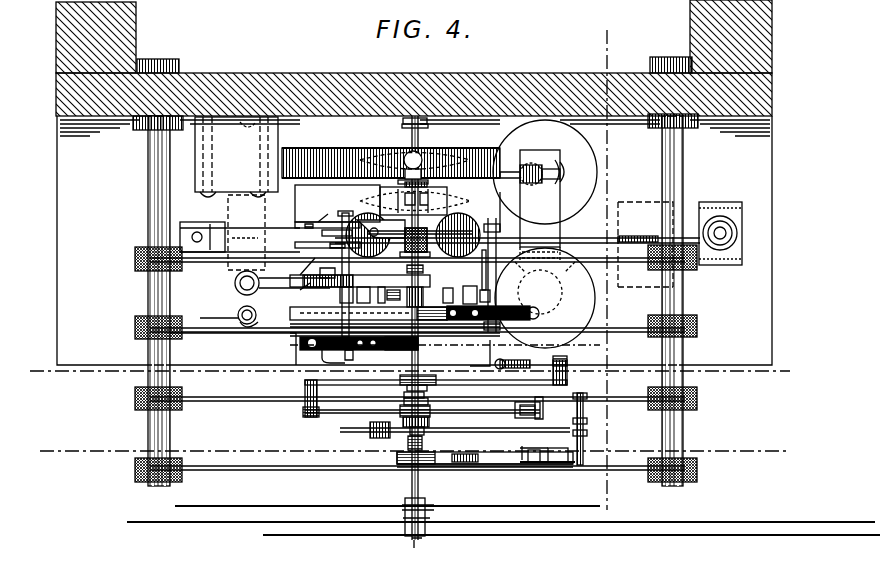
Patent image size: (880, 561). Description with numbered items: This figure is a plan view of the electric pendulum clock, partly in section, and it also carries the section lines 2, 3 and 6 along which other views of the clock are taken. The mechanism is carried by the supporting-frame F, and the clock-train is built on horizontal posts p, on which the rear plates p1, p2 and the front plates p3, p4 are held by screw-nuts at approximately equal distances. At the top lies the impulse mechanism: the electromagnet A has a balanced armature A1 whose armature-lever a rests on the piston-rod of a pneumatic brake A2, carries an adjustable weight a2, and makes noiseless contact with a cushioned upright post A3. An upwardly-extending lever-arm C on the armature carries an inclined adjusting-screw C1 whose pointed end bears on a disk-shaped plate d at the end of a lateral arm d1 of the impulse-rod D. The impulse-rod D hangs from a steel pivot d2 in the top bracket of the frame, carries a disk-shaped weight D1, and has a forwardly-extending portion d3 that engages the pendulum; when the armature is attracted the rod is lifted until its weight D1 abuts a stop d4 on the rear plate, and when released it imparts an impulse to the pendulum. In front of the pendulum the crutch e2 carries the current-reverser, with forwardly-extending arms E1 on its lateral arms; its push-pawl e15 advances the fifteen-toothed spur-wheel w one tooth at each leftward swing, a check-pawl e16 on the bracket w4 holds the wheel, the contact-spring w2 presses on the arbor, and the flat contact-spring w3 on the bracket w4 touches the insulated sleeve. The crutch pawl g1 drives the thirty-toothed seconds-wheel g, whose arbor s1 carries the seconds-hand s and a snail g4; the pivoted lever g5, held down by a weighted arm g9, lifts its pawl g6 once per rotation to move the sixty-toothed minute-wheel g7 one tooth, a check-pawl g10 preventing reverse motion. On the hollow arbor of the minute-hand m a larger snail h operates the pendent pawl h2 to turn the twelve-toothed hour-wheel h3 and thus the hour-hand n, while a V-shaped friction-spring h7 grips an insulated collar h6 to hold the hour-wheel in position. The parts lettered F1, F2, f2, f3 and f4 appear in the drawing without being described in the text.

The supporting-frame F is at (70, 97).
The horizontal posts p is at (148, 186).
The rear plate p1 is at (135, 259).
The second supporting-plate p2 is at (135, 327).
The third supporting-plate p3 is at (135, 400).
The front plate p4 is at (135, 468).
The section line 6 6 is at (412, 384).
The section line 3 3 is at (408, 458).
The section line 2 2 is at (605, 270).
The hour-hand n is at (387, 496).
The minute-hand m is at (501, 532).
The seconds-hand s is at (533, 536).
The arbor of the seconds-hand s1 is at (417, 546).
The steel pivot d2 is at (422, 128).
The disk-shaped weight D1 is at (391, 150).
The impulse-rod D is at (405, 156).
The lateral arm d1 is at (440, 168).
The forwardly-extending portion d3 is at (385, 199).
The pneumatic brake A2 is at (466, 218).
The disk-shaped plate d is at (437, 213).
The lever-arm C is at (548, 150).
The adjusting-screw C1 is at (560, 175).
The armature A1 is at (540, 206).
The electromagnet A is at (595, 311).
The push-pawl e15 is at (540, 294).
The armature-lever a is at (517, 244).
The upright post A3 is at (734, 205).
The adjustable weight a2 is at (737, 233).
The stop d4 is at (236, 157).
The block F1 is at (240, 226).
The bracket w4 is at (232, 262).
The bracket F2 is at (330, 216).
The lever f3 is at (333, 218).
The roller f2 is at (235, 240).
The arm f4 is at (310, 278).
The flat contact-spring w3 is at (360, 286).
The contact-spring w2 is at (414, 274).
The spur-wheel w is at (395, 322).
The crutch e2 is at (428, 252).
The forwardly-extending arms E1 is at (496, 281).
The check-pawl e16 is at (300, 315).
The pawl g1 is at (398, 352).
The seconds-wheel g is at (445, 356).
The snail g4 is at (420, 380).
The weighted arm g9 is at (567, 362).
The pivoted lever g5 is at (305, 382).
The pawl g6 is at (306, 414).
The minute-wheel g7 is at (380, 410).
The check-pawl g10 is at (540, 412).
The hour-wheel h3 is at (430, 422).
The pendent pawl h2 is at (370, 430).
The snail h is at (430, 442).
The insulated collar h6 is at (400, 464).
The friction-spring h7 is at (523, 462).